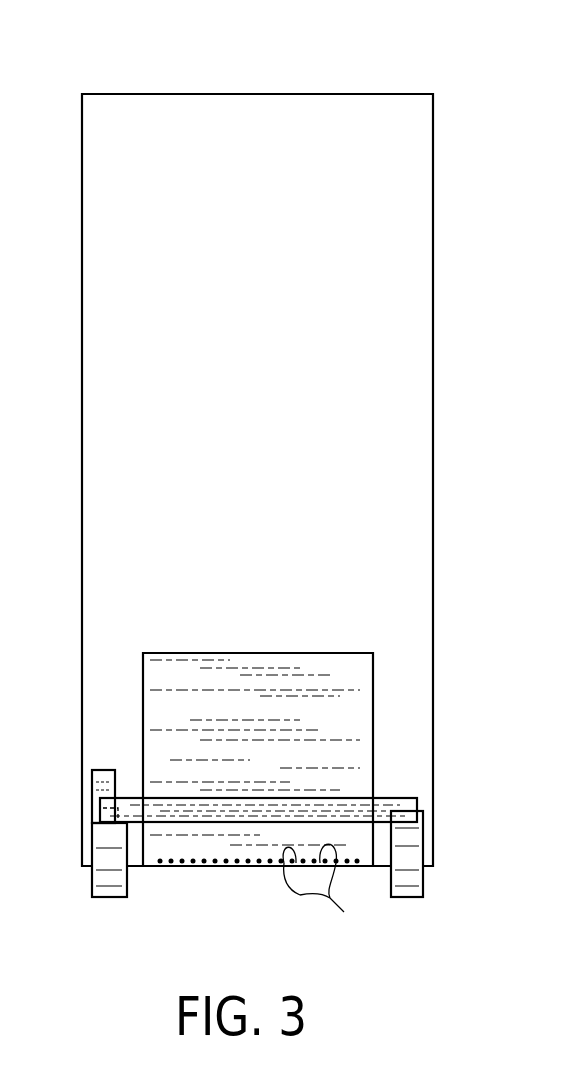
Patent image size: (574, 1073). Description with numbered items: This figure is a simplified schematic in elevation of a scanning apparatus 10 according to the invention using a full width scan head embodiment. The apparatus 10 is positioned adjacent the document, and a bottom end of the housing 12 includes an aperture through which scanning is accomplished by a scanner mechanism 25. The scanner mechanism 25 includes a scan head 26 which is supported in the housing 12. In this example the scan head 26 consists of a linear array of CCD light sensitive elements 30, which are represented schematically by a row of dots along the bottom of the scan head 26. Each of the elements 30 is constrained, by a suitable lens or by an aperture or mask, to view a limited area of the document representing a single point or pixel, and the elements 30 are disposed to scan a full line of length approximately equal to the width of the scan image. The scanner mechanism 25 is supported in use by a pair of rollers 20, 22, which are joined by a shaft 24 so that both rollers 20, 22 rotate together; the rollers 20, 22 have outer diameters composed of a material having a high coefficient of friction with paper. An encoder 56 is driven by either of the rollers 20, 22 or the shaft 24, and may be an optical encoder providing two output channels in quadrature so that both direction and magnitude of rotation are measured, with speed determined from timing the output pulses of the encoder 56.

The apparatus 10 is at (243, 80).
The housing 12 is at (398, 443).
The roller 20 is at (113, 885).
The roller 22 is at (408, 885).
The shaft 24 is at (392, 797).
The scanner mechanism 25 is at (248, 652).
The scan head 26 is at (235, 868).
The light sensitive elements 30 is at (328, 885).
The encoder 56 is at (103, 777).